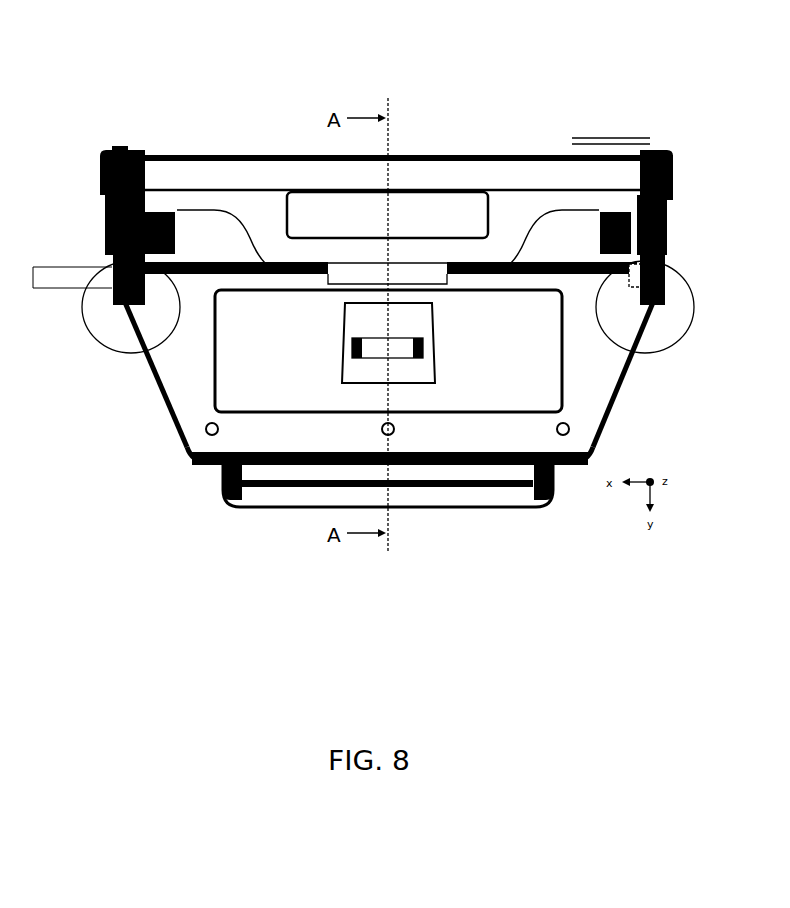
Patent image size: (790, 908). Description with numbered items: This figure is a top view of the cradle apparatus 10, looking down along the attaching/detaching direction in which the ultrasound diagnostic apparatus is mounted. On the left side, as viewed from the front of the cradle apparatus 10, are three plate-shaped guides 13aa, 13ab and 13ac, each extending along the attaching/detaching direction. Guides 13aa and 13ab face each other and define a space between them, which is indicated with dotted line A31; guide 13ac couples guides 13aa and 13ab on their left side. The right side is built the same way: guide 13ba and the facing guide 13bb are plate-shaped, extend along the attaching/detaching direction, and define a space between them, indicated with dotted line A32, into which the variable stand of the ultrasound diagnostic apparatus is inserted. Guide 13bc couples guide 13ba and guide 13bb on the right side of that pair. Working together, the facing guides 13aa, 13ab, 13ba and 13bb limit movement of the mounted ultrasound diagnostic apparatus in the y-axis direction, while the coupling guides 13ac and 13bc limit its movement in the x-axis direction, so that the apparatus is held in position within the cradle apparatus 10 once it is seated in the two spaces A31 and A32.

The cradle apparatus 10 is at (356, 48).
The dotted line A31 is at (112, 267).
The dotted line A32 is at (662, 274).
The guide 13aa is at (131, 317).
The guide 13ab is at (175, 312).
The guide 13ac is at (108, 271).
The guide 13ba is at (647, 325).
The guide 13bb is at (598, 318).
The guide 13bc is at (667, 281).